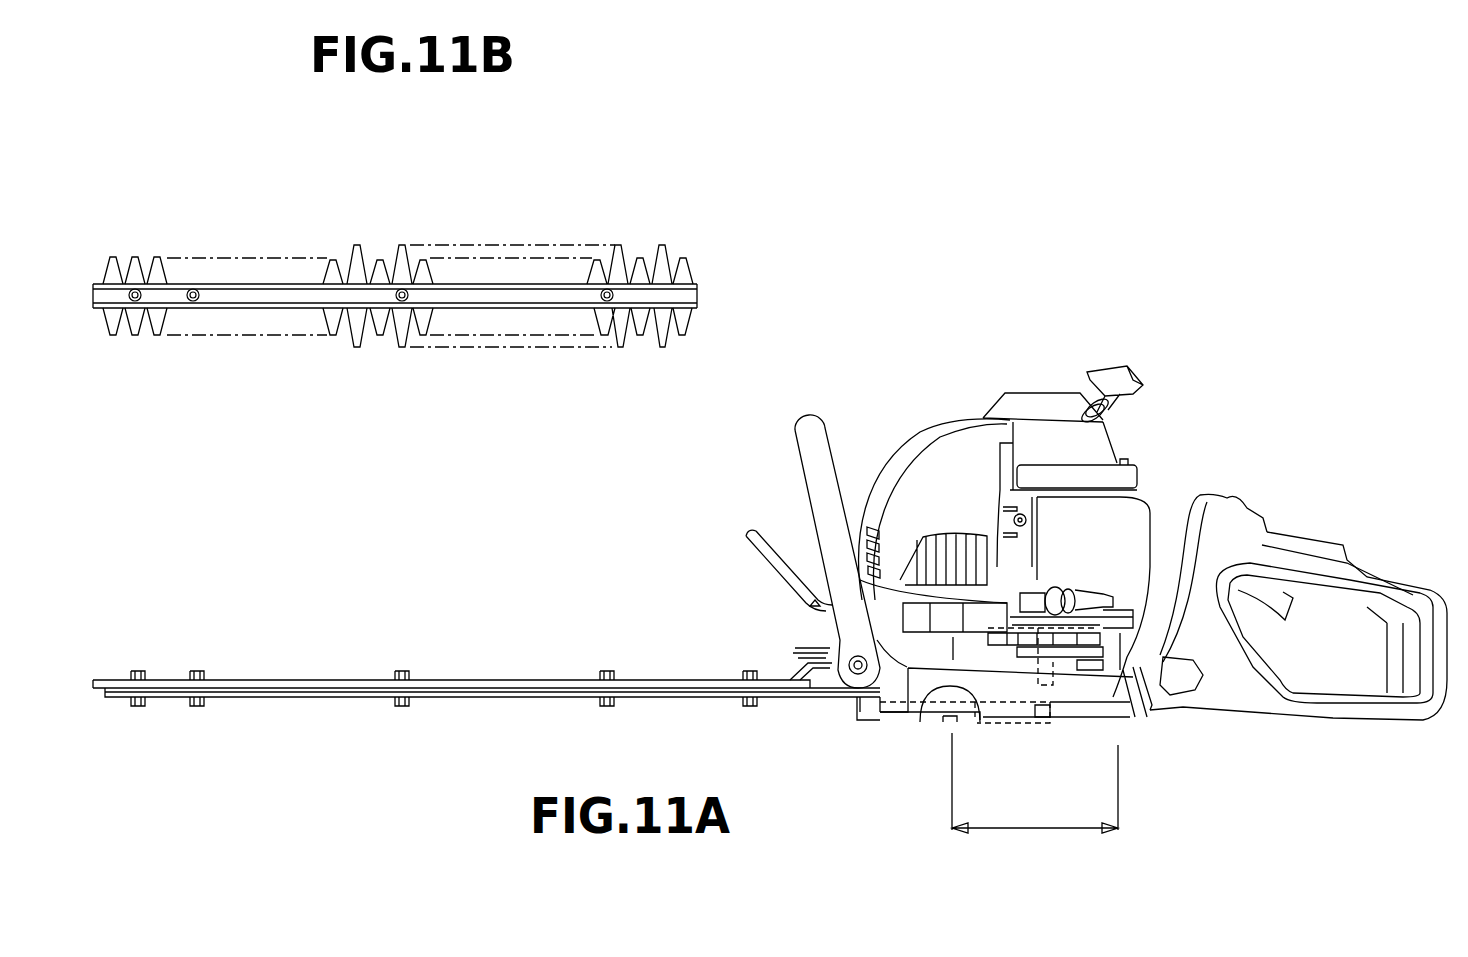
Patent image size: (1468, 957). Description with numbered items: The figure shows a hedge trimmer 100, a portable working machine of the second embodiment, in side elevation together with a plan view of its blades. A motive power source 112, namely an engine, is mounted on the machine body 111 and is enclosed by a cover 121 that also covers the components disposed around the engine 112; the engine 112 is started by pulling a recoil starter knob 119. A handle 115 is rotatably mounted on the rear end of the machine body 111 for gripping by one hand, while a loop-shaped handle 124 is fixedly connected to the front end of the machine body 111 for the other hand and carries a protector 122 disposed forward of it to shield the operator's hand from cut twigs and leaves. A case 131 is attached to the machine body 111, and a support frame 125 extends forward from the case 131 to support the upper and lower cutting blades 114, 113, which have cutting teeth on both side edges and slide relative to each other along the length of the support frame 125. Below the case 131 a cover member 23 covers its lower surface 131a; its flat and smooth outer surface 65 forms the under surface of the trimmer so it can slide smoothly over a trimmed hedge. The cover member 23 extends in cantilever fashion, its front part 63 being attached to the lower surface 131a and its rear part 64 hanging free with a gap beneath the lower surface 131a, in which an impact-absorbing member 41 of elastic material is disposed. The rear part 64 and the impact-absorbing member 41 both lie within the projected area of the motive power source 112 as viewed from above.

In FIG. 11A, the hedge trimmer 100 is at (1033, 270).
In FIG. 11A, the machine body 111 is at (805, 655).
In FIG. 11A, the motive power source 112 is at (1085, 583).
In FIG. 11B, the lower cutting blade 113 is at (402, 286).
In FIG. 11A, the lower cutting blade 113 is at (300, 700).
In FIG. 11B, the upper cutting blade 114 is at (420, 262).
In FIG. 11A, the upper cutting blade 114 is at (340, 688).
In FIG. 11A, the handle 115 is at (1250, 558).
In FIG. 11A, the recoil starter knob 119 is at (1122, 366).
In FIG. 11A, the cover 121 is at (905, 452).
In FIG. 11A, the protector 122 is at (748, 532).
In FIG. 11A, the handle 124 is at (800, 415).
In FIG. 11B, the support frame 125 is at (483, 298).
In FIG. 11A, the support frame 125 is at (275, 672).
In FIG. 11A, the cover member 23 is at (870, 743).
In FIG. 11A, the impact-absorbing member 41 is at (926, 730).
In FIG. 11A, the front part 63 is at (895, 728).
In FIG. 11A, the rear part 64 is at (983, 727).
In FIG. 11A, the outer surface 65 is at (918, 727).
In FIG. 11A, the case 131 is at (1088, 733).
In FIG. 11A, the lower surface 131a is at (1112, 722).